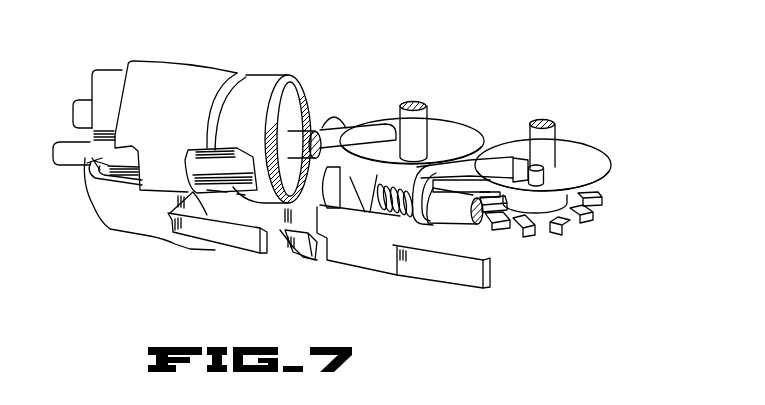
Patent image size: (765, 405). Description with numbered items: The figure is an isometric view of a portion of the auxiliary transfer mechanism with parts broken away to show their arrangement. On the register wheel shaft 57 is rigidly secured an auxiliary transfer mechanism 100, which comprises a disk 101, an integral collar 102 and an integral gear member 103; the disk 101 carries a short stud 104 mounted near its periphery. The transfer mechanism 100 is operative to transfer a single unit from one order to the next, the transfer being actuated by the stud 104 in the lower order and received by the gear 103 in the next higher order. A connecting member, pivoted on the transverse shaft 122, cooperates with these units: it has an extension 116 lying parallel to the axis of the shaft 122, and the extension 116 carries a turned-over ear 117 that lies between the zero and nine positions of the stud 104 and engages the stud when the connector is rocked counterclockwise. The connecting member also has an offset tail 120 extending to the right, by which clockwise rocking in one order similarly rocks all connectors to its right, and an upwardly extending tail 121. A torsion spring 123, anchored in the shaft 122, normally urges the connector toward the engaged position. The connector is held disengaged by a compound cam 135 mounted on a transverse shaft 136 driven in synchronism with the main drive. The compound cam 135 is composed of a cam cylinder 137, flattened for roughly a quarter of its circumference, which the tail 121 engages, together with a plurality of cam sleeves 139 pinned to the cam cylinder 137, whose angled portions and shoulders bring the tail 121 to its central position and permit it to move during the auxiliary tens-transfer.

The register wheel shaft 57 is at (417, 123).
The auxiliary transfer mechanism 100 is at (561, 184).
The disk 101 is at (577, 153).
The collar 102 is at (560, 203).
The gear member 103 is at (557, 232).
The stud 104 is at (545, 172).
The extension 116 is at (453, 172).
The turned-over ear 117 is at (517, 166).
The offset tail 120 is at (235, 245).
The tail 121 is at (125, 183).
The transverse shaft 122 is at (478, 224).
The torsion spring 123 is at (409, 218).
The compound cam 135 is at (247, 76).
The transverse shaft 136 is at (308, 142).
The cam cylinder 137 is at (93, 168).
The cam sleeves 139 is at (180, 78).